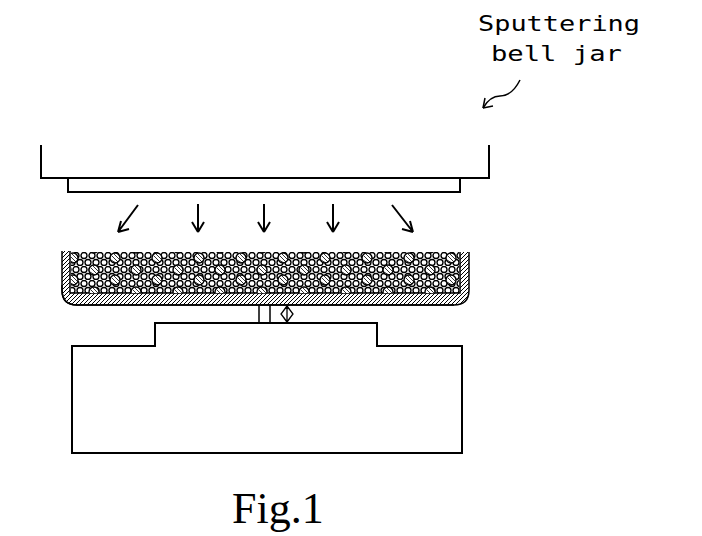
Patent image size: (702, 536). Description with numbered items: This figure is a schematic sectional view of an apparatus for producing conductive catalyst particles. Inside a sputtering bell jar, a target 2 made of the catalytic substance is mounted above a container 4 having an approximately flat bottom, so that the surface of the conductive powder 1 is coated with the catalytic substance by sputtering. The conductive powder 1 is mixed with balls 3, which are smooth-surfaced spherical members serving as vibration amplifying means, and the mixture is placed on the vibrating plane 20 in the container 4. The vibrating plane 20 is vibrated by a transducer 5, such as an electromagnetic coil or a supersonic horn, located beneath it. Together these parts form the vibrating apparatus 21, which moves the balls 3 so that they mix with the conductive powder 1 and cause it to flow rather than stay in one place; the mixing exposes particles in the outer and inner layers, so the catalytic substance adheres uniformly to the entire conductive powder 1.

The conductive powder 1 is at (466, 281).
The target 2 is at (457, 186).
The balls 3 is at (469, 262).
The container 4 is at (63, 296).
The transducer 5 is at (435, 425).
The vibrating plane 20 is at (452, 305).
The vibrating apparatus 21 is at (545, 262).